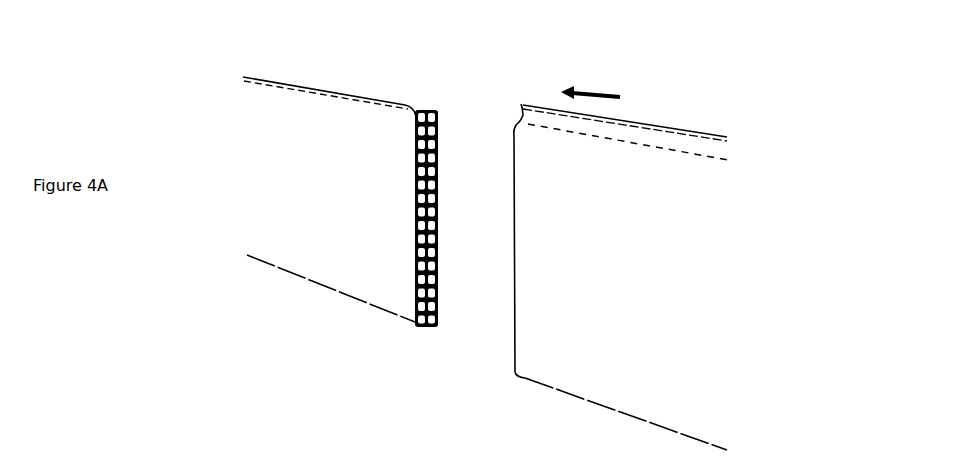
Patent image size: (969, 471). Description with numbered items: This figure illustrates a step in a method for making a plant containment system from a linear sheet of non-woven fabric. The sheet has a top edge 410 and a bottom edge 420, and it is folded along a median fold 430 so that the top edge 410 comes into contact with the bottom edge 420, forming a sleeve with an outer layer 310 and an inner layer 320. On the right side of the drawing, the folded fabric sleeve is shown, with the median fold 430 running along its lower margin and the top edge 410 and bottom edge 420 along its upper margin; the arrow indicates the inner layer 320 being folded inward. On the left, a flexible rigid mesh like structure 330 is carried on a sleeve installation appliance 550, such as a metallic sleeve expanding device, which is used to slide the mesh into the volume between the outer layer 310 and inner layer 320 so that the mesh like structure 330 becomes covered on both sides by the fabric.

The outer layer 310 is at (587, 323).
The inner layer 320 is at (530, 104).
The flexible rigid mesh like structure 330 is at (444, 234).
The top edge 410 is at (712, 121).
The bottom edge 420 is at (612, 124).
The median fold 430 is at (642, 409).
The sleeve installation appliance 550 is at (300, 286).